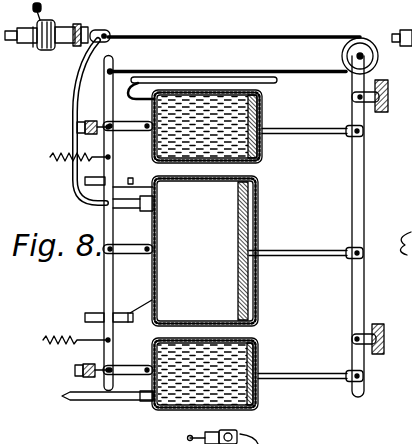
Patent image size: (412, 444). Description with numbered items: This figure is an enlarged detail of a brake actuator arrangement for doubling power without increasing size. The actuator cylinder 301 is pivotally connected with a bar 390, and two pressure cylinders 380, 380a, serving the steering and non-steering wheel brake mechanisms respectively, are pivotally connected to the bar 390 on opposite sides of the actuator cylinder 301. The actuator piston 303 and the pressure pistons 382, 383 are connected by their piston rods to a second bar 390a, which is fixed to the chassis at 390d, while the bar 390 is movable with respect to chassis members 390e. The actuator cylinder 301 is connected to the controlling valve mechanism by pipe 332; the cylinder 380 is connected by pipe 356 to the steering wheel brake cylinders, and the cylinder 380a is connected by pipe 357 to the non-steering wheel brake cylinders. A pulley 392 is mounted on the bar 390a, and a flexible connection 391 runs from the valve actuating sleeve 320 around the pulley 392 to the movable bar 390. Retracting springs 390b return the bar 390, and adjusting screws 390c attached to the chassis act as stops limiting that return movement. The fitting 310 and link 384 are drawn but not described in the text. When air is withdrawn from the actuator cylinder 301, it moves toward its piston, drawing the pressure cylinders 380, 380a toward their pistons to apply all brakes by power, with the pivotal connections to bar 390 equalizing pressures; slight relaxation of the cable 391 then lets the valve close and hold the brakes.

The actuator cylinder 301 is at (152, 289).
The actuator piston 303 is at (251, 226).
The regulating valve 310 is at (62, 44).
The valve actuating part or sleeve 320 is at (104, 26).
The pipe 332 is at (72, 115).
The pipe 356 is at (101, 400).
The pipe 357 is at (222, 77).
The pressure cylinder 380 is at (152, 358).
The pressure cylinder 380a is at (130, 177).
The pressure piston 382 is at (262, 113).
The pressure piston 383 is at (258, 391).
The link 384 is at (302, 258).
The bar 390 is at (104, 289).
The bar 390a is at (361, 234).
The retracting springs 390b is at (85, 323).
The adjusting screws 390c is at (77, 128).
The chassis fixing point 390d is at (383, 112).
The chassis members 390e is at (160, 188).
The flexible connection 391 is at (200, 35).
The pulley 392 is at (356, 42).